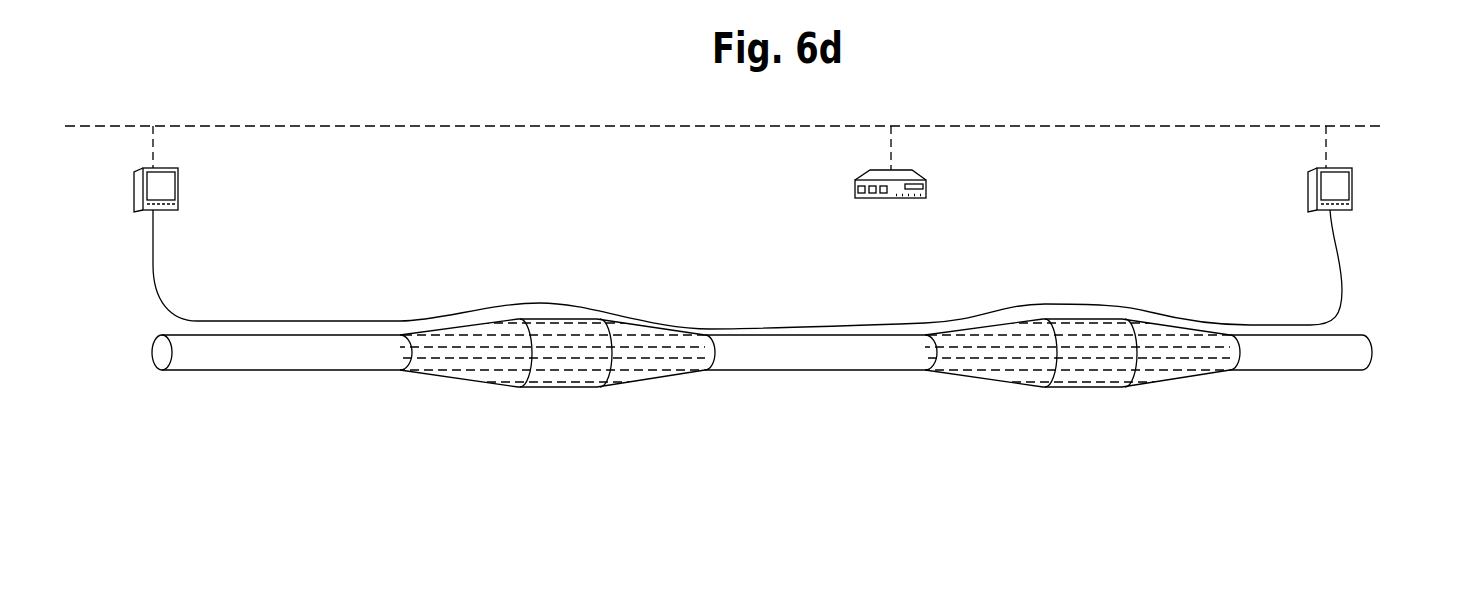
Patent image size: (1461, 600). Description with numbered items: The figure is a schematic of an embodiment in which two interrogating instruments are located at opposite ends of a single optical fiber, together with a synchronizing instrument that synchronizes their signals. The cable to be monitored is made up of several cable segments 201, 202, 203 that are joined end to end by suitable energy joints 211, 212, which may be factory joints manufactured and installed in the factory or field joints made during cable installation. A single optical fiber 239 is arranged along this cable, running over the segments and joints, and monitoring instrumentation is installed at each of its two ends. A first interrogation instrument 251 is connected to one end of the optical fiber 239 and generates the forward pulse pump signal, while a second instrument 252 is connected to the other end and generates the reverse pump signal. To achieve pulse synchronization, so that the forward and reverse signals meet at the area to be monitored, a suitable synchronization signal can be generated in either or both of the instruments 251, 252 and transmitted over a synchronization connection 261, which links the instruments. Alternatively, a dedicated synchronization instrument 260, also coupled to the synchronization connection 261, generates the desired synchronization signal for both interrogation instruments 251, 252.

The synchronization connection 261 is at (496, 126).
The first interrogation instrument 251 is at (178, 192).
The second instrument 252 is at (1352, 190).
The synchronization instrument 260 is at (926, 189).
The optical fiber 239 is at (197, 321).
The cable segment 201 is at (302, 356).
The cable segment 202 is at (840, 352).
The cable segment 203 is at (1283, 348).
The energy joint 211 is at (560, 360).
The energy joint 212 is at (1082, 362).